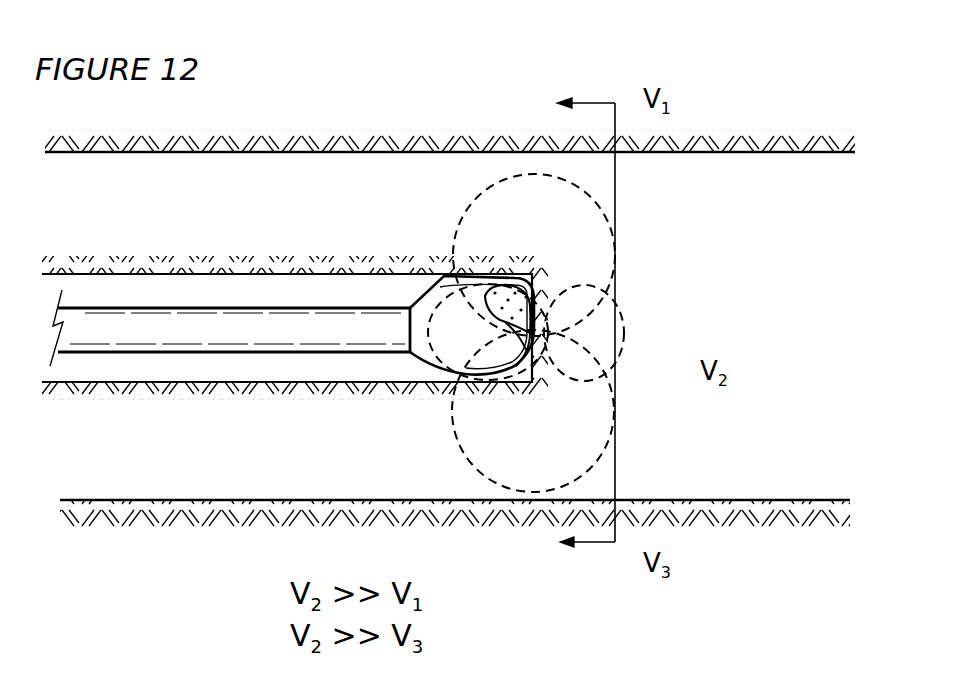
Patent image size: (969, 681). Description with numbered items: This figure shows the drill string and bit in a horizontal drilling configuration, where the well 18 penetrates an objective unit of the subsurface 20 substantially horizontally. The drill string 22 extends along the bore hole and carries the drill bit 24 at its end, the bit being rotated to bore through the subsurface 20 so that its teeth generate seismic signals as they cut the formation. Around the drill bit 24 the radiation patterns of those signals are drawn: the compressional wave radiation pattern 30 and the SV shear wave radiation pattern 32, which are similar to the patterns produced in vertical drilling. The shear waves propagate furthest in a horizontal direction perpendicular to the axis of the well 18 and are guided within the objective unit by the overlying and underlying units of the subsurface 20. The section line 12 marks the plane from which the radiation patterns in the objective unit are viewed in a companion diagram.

The section line 12- 12 is at (569, 322).
The well 18 is at (188, 270).
The subsurface 20 is at (103, 205).
The drill string 22 is at (285, 320).
The drill bit 24 is at (440, 275).
The compressional wave radiation pattern 30 is at (418, 372).
The SV shear wave radiation pattern 32 is at (584, 193).